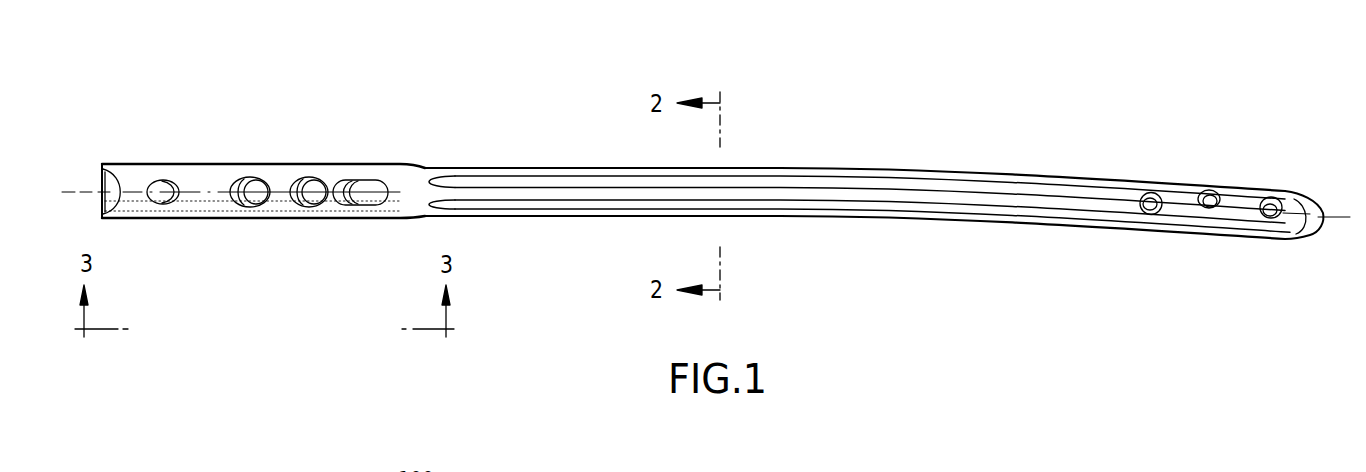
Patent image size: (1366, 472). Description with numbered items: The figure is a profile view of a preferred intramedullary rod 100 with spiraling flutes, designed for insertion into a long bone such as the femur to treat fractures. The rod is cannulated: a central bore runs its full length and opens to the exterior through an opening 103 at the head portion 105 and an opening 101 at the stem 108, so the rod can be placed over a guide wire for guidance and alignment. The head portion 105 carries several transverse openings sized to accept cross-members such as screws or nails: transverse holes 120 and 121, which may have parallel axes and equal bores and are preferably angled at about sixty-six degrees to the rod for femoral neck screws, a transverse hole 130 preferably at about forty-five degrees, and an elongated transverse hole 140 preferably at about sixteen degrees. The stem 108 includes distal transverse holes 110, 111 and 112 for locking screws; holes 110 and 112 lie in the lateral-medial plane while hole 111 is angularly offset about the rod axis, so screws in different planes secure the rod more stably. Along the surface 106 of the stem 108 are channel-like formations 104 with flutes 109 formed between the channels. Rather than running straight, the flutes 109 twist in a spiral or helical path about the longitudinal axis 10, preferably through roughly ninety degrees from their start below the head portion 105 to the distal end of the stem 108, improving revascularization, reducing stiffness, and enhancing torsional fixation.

The longitudinal axis 10 is at (73, 192).
The intramedullary rod 100 is at (719, 190).
The opening 101 is at (1325, 206).
The opening 103 is at (103, 176).
The channel-like formations 104 is at (905, 175).
The head portion 105 is at (224, 163).
The surface 106 is at (583, 167).
The stem 108 is at (1189, 204).
The flutes 109 is at (625, 178).
The distal transverse hole 110 is at (1148, 214).
The distal transverse hole 111 is at (1215, 207).
The distal transverse hole 112 is at (1268, 213).
The transverse hole 120 is at (260, 203).
The transverse hole 121 is at (305, 207).
The transverse hole 130 is at (160, 200).
The elongated transverse hole 140 is at (368, 187).